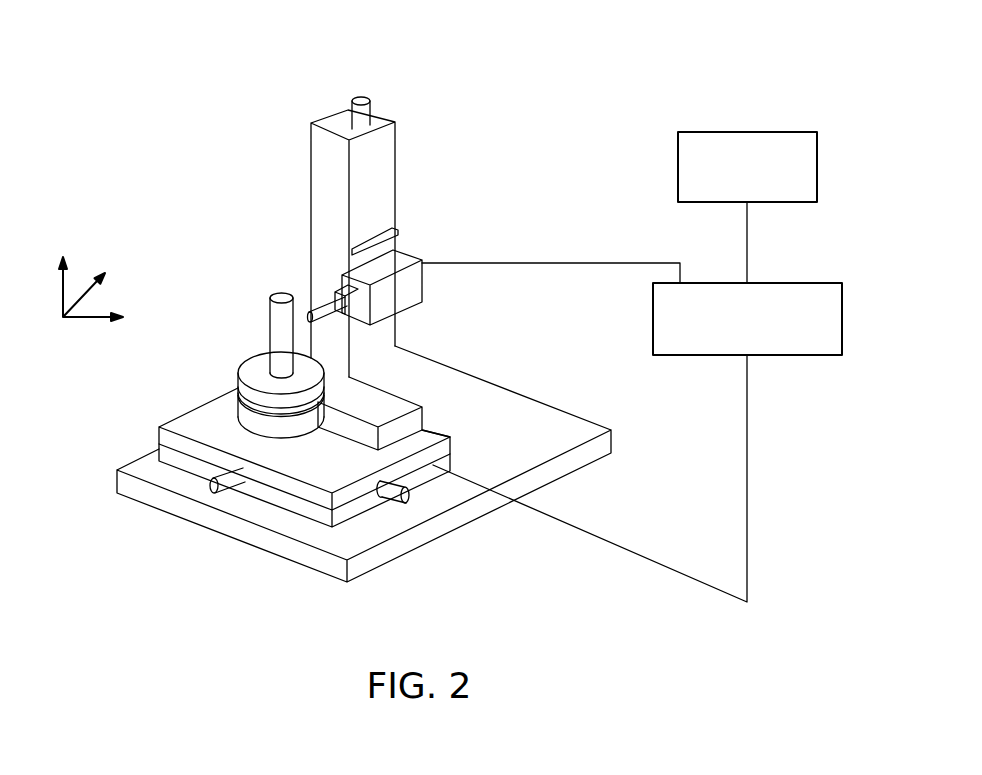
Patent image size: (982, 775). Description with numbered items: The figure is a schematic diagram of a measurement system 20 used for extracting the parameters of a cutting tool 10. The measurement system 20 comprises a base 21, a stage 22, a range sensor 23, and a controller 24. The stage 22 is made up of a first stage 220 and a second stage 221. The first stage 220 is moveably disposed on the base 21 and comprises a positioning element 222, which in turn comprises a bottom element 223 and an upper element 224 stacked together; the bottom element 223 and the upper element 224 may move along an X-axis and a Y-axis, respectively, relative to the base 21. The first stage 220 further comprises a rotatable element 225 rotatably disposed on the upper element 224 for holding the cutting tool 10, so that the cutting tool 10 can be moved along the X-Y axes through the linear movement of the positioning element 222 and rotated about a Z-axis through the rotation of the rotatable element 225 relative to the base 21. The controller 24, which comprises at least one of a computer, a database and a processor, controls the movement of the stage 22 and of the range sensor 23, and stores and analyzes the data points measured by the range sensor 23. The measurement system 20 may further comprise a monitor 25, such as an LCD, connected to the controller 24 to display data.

The measurement system 20 is at (451, 80).
The base 21 is at (485, 400).
The stage 22 is at (348, 273).
The second stage 221 is at (388, 148).
The range sensor 23 is at (407, 255).
The cutting tool 10 is at (272, 330).
The first stage 220 is at (279, 481).
The upper element 224 is at (313, 480).
The bottom element 223 is at (188, 463).
The positioning element 222 is at (357, 507).
The rotatable element 225 is at (238, 388).
The controller 24 is at (843, 318).
The monitor 25 is at (818, 163).